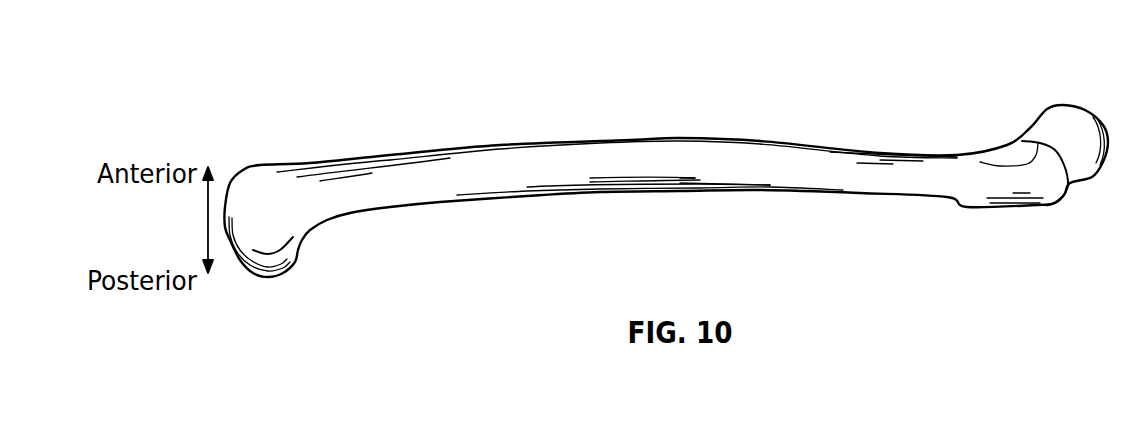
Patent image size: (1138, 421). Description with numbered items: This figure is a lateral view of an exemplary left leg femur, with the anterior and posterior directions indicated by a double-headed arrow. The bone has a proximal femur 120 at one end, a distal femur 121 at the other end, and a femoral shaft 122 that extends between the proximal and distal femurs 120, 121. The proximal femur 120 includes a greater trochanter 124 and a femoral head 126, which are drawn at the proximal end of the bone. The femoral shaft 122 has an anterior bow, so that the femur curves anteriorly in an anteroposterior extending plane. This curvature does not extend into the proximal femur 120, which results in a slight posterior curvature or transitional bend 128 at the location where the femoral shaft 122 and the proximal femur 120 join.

The proximal femur 120 is at (1048, 98).
The distal femur 121 is at (262, 158).
The femoral shaft 122 is at (630, 138).
The greater trochanter 124 is at (1047, 185).
The femoral head 126 is at (1075, 118).
The transitional bend 128 is at (958, 148).